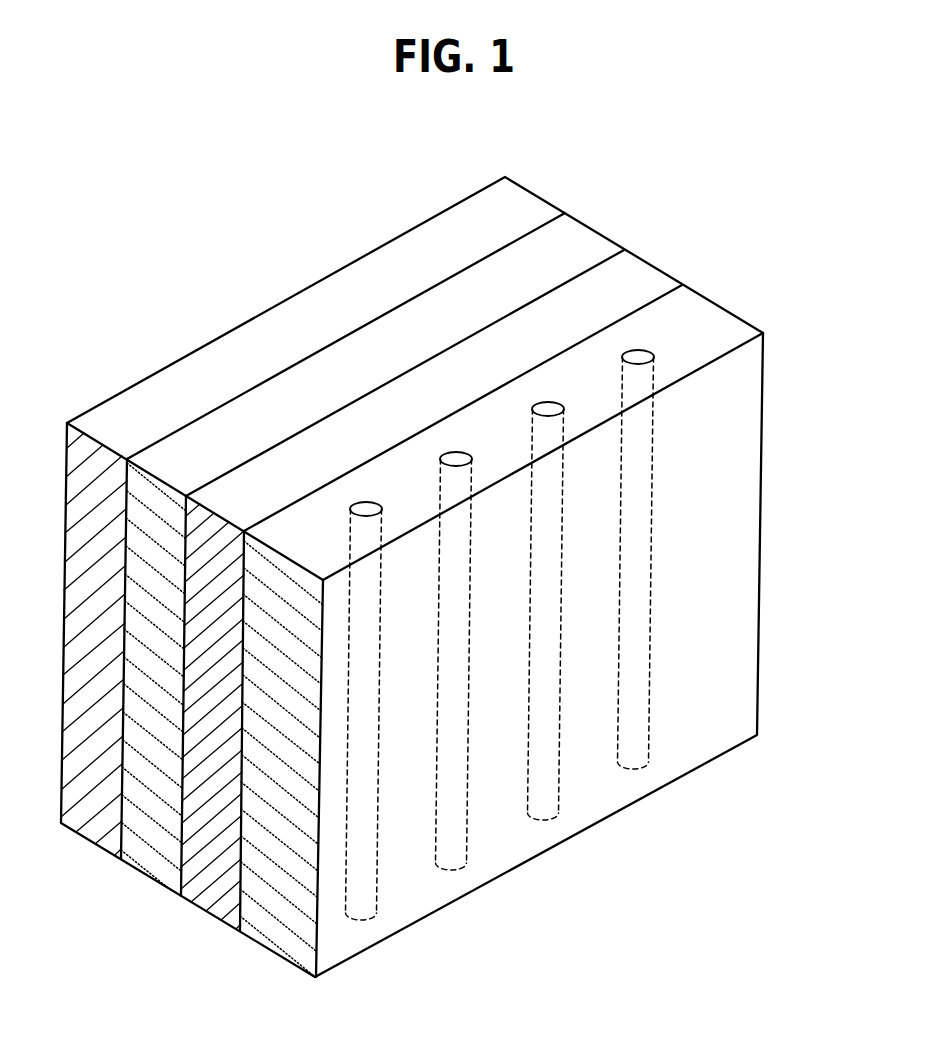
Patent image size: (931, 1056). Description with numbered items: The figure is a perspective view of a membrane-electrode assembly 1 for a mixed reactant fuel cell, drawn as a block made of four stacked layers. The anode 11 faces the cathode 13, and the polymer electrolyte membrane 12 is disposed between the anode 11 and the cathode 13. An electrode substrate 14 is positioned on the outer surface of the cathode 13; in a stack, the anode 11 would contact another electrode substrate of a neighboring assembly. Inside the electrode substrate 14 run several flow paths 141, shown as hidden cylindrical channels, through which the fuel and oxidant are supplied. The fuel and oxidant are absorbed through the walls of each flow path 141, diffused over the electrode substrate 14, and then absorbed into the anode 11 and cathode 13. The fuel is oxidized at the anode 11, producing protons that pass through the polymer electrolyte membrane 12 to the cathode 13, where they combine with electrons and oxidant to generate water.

The membrane-electrode assembly 1 is at (595, 211).
The anode 11 is at (84, 828).
The polymer electrolyte membrane 12 is at (147, 860).
The cathode 13 is at (203, 900).
The electrode substrate 14 is at (262, 934).
The flow path 141 is at (647, 498).